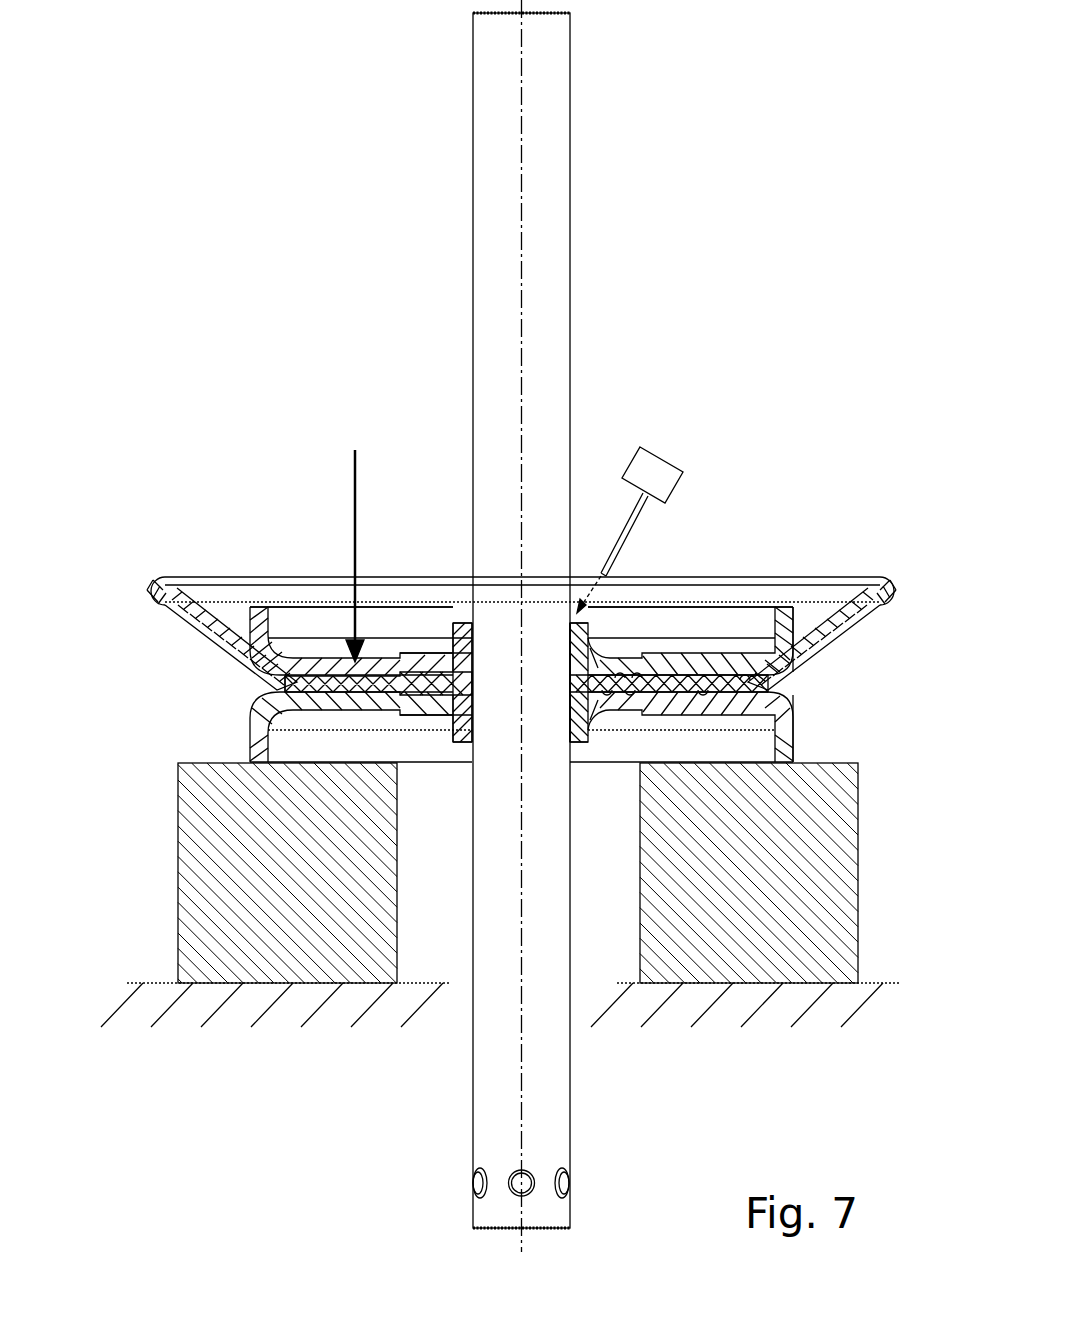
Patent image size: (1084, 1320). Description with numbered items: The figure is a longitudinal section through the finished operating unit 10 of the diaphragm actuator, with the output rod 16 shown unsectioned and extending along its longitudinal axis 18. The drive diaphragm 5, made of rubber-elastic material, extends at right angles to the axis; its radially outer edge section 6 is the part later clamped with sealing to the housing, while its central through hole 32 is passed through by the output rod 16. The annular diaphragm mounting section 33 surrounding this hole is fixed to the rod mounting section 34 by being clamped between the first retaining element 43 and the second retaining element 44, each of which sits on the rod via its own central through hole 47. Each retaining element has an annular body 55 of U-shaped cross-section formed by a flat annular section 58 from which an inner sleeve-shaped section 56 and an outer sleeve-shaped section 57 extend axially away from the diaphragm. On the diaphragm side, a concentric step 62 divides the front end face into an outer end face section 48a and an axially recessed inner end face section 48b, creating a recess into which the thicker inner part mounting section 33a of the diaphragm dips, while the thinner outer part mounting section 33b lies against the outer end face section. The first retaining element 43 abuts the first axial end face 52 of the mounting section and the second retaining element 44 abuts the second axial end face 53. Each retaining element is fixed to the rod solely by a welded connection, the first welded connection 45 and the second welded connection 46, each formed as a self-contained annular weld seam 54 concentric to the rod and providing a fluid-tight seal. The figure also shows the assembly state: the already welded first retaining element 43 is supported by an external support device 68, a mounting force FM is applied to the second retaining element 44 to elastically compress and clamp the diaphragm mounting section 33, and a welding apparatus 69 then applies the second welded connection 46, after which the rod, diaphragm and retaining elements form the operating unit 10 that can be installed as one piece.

The drive diaphragm 5 is at (200, 636).
The outer edge section 6 is at (140, 596).
The operating unit 10 is at (637, 287).
The output rod 16 is at (486, 190).
The longitudinal axis 18 is at (528, 148).
The central through hole 32 is at (567, 636).
The diaphragm mounting section 33 is at (374, 697).
The inner part mounting section 33a is at (412, 697).
The outer part mounting section 33b is at (332, 697).
The rod mounting section 34 is at (495, 690).
The first retaining element 43 is at (803, 724).
The second retaining element 44 is at (792, 651).
The first welded connection 45 is at (462, 718).
The second welded connection 46 is at (462, 647).
The central through hole 47 is at (560, 676).
The outer end face section 48a is at (760, 675).
The inner end face section 48b is at (620, 675).
The first axial end face 52 is at (304, 700).
The second axial end face 53 is at (312, 672).
The weld seam 54 is at (466, 628).
The annular body 55 is at (790, 612).
The inner sleeve-shaped section 56 is at (452, 622).
The outer sleeve-shaped section 57 is at (257, 622).
The annular section 58 is at (738, 676).
The step 62 is at (637, 676).
The support device 68 is at (196, 887).
The welding apparatus 69 is at (662, 455).
The mounting force FM is at (352, 483).